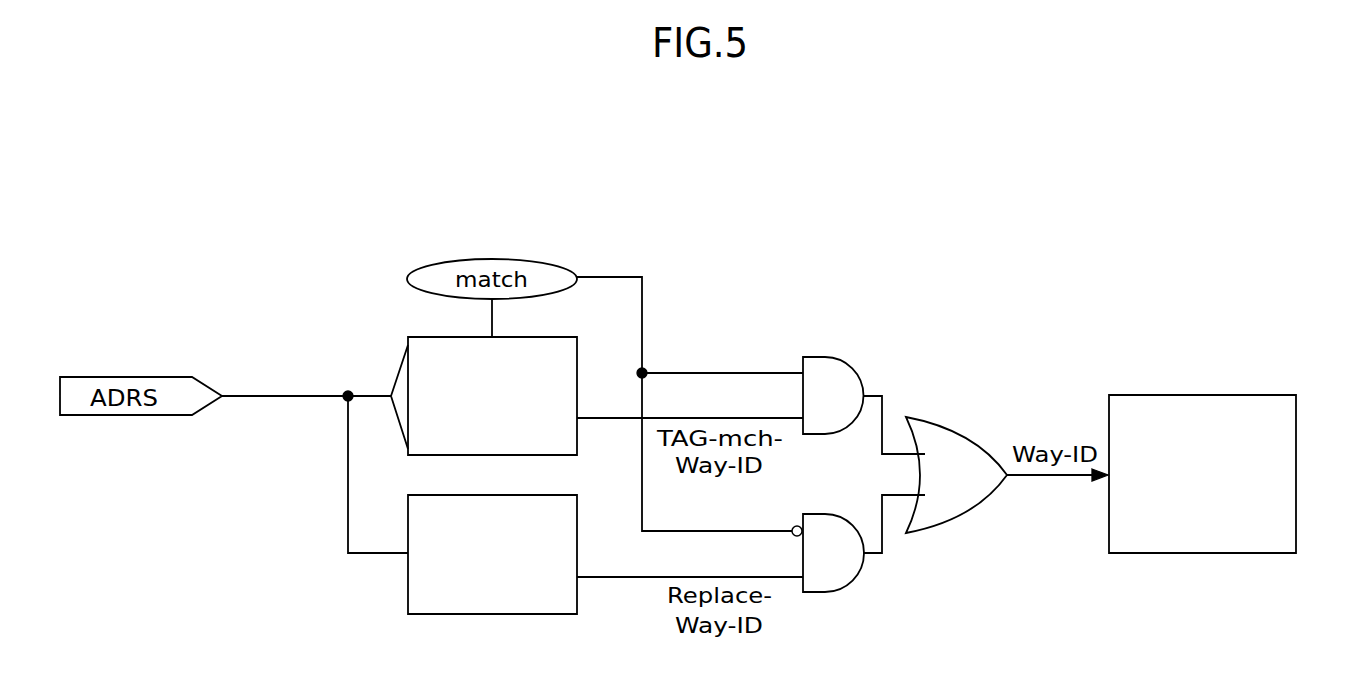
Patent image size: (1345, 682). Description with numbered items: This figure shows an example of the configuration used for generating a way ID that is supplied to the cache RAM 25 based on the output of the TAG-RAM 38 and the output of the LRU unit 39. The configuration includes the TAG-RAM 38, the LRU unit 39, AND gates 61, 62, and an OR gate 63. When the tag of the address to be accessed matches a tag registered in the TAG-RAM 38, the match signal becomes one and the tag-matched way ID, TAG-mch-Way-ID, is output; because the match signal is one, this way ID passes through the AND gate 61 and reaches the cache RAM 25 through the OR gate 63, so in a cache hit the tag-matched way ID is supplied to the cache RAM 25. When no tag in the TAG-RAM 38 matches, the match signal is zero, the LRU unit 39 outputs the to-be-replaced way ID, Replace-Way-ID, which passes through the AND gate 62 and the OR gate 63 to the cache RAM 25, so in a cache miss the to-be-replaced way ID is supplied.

The cache RAM 25 is at (1272, 395).
The TAG-RAM 38 is at (400, 358).
The LRU unit 39 is at (407, 537).
The AND gate 61 is at (840, 358).
The AND gate 62 is at (840, 591).
The OR gate 63 is at (950, 420).